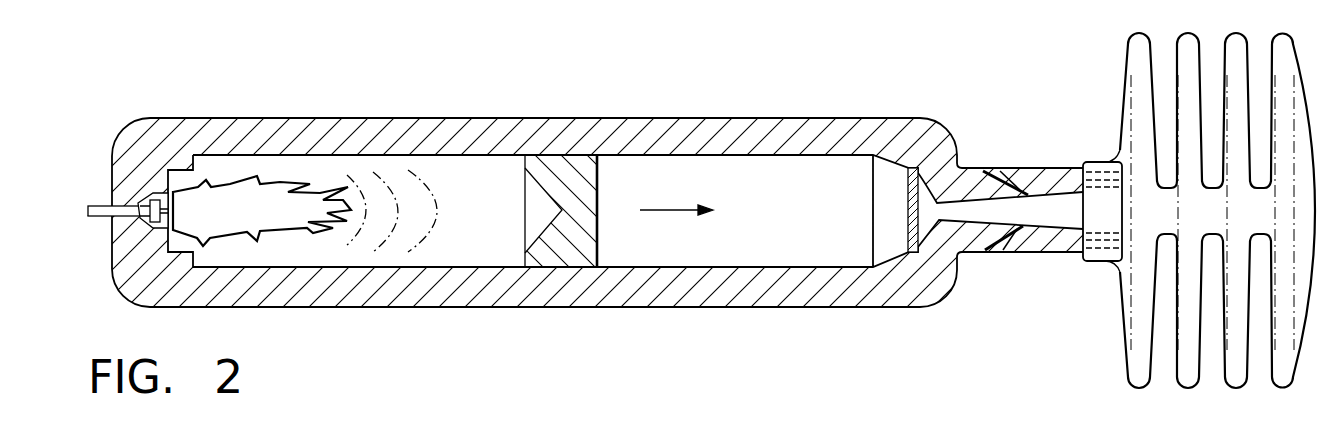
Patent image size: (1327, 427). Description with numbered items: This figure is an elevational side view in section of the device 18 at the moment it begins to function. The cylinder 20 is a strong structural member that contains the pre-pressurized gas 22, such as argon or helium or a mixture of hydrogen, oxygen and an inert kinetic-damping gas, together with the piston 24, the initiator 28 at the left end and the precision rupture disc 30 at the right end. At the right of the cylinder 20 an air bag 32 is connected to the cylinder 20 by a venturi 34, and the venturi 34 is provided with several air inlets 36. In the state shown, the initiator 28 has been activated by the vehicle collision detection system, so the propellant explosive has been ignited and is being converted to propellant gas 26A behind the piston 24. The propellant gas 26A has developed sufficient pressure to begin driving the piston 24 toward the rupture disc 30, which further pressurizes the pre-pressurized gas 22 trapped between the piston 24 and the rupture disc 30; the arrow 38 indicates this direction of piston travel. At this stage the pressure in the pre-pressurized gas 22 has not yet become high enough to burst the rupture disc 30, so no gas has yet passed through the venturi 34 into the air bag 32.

The device 18 is at (399, 76).
The cylinder 20 is at (455, 128).
The pre-pressurized gas 22 is at (710, 168).
The piston 24 is at (592, 187).
The propellant gas 26A is at (261, 219).
The initiator 28 is at (154, 208).
The precision rupture disc 30 is at (913, 203).
The air bag 32 is at (1123, 73).
The venturi 34 is at (1050, 212).
The air inlets 36 is at (1002, 240).
The gas flow direction 38 is at (680, 226).